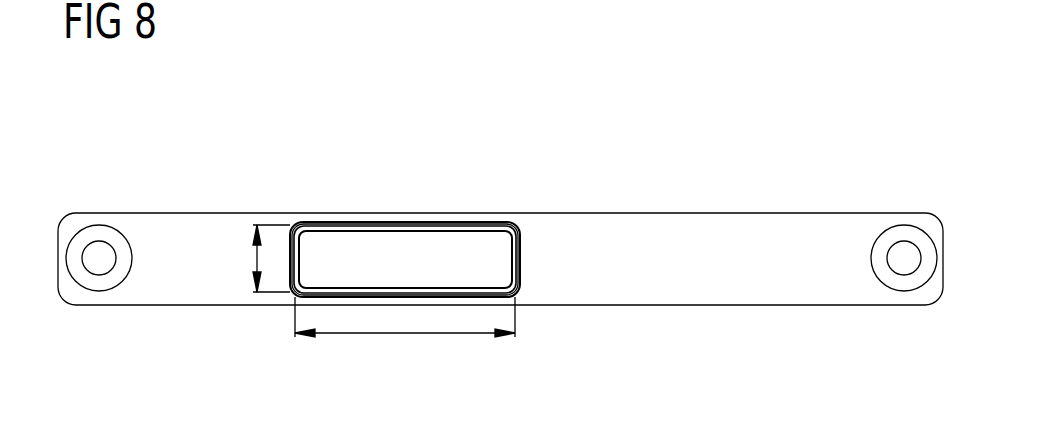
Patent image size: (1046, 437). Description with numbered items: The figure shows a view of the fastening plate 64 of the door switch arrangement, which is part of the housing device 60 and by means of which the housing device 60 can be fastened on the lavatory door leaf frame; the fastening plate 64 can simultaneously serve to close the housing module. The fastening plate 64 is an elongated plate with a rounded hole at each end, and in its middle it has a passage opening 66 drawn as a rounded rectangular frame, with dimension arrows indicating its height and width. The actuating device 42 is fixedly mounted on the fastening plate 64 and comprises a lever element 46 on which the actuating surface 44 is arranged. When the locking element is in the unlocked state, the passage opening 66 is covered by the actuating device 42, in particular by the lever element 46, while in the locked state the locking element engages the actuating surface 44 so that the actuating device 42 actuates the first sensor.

The housing device 60 is at (132, 162).
The actuating device 42 is at (405, 197).
The actuating surface 44 is at (388, 242).
The lever element 46 is at (483, 242).
The passage opening 66 is at (434, 232).
The fastening plate 64 is at (205, 240).